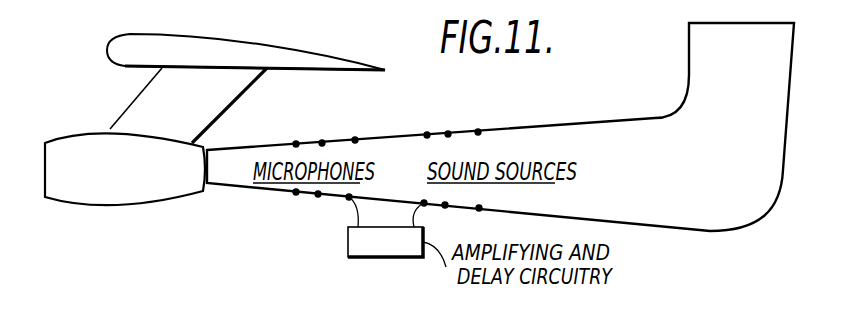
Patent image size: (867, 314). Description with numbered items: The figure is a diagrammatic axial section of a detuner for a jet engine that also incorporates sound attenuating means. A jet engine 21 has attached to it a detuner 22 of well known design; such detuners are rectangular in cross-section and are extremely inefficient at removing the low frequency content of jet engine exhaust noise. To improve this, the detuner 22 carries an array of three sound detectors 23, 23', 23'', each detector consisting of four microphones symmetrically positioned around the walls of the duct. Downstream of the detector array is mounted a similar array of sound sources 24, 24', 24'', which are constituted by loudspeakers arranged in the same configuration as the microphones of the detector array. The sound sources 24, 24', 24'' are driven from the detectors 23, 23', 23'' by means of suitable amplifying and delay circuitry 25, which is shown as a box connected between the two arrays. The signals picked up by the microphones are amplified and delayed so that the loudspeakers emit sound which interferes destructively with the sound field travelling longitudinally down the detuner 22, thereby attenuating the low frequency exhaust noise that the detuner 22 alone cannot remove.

The jet engine 21 is at (100, 197).
The detuner 22 is at (557, 125).
The sound detector 23 is at (271, 146).
The sound detector 23' is at (311, 147).
The sound detector 23'' is at (367, 149).
The sound source 24 is at (439, 145).
The sound source 24' is at (478, 146).
The sound source 24'' is at (535, 148).
The amplifying and delay circuitry 25 is at (360, 243).